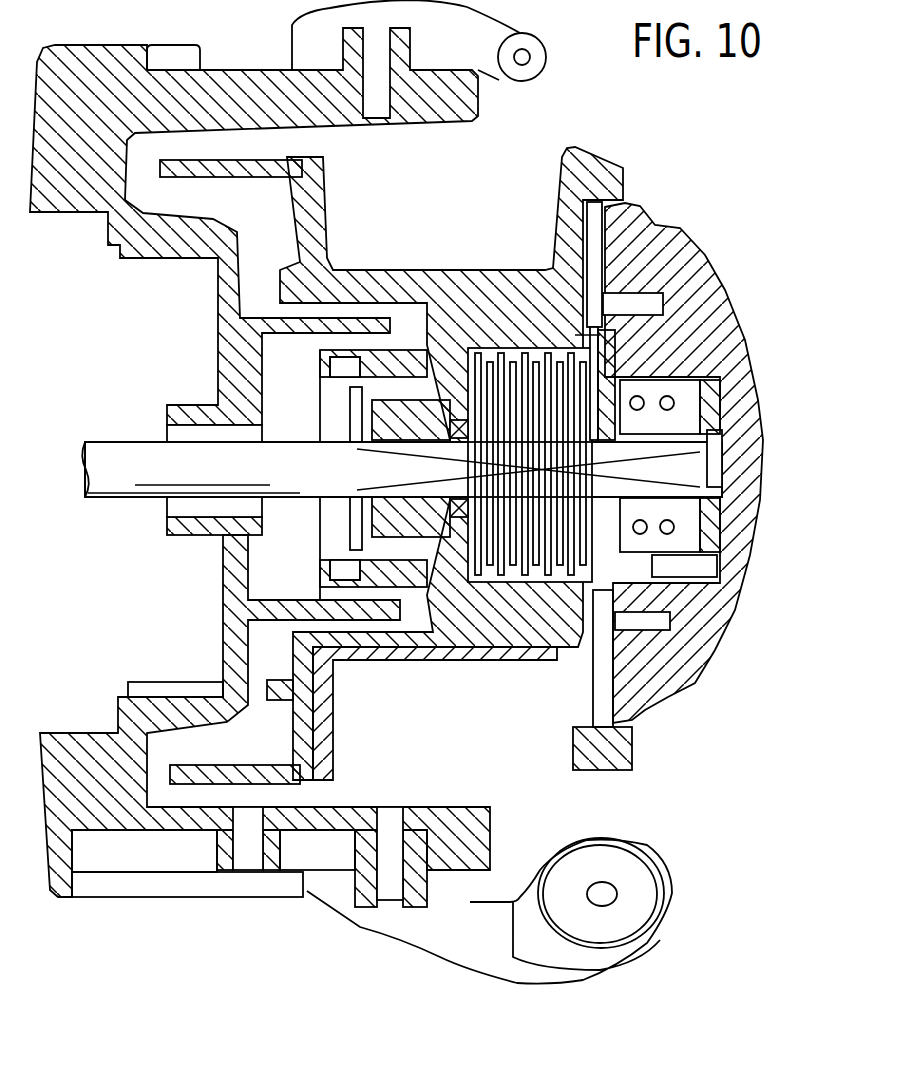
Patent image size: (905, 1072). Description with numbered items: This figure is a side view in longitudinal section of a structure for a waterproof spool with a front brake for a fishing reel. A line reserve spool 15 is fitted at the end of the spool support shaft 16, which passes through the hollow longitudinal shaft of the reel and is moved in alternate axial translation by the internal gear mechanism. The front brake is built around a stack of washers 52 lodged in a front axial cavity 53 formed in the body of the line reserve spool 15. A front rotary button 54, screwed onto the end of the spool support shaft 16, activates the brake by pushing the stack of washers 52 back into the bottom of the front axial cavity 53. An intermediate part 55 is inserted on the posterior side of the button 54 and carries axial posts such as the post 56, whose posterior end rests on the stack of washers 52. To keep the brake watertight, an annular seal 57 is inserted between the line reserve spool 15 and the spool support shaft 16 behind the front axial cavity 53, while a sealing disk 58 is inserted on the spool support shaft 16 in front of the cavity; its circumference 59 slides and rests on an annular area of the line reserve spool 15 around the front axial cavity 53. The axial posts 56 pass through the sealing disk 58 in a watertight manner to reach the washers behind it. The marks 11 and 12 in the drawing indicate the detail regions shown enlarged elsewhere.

The gap between clutch plates and pressure plate 11 is at (578, 333).
The seal rings 12 is at (552, 499).
The line reserve spool 15 is at (498, 664).
The spool support shaft 16 is at (383, 396).
The stack of washers 52 is at (501, 346).
The front axial cavity 53 is at (480, 346).
The front rotary button 54 is at (700, 351).
The intermediate part 55 is at (633, 623).
The axial post 56 is at (627, 545).
The annular seal 57 is at (460, 562).
The sealing disk 58 is at (665, 312).
The circumference 59 is at (620, 278).